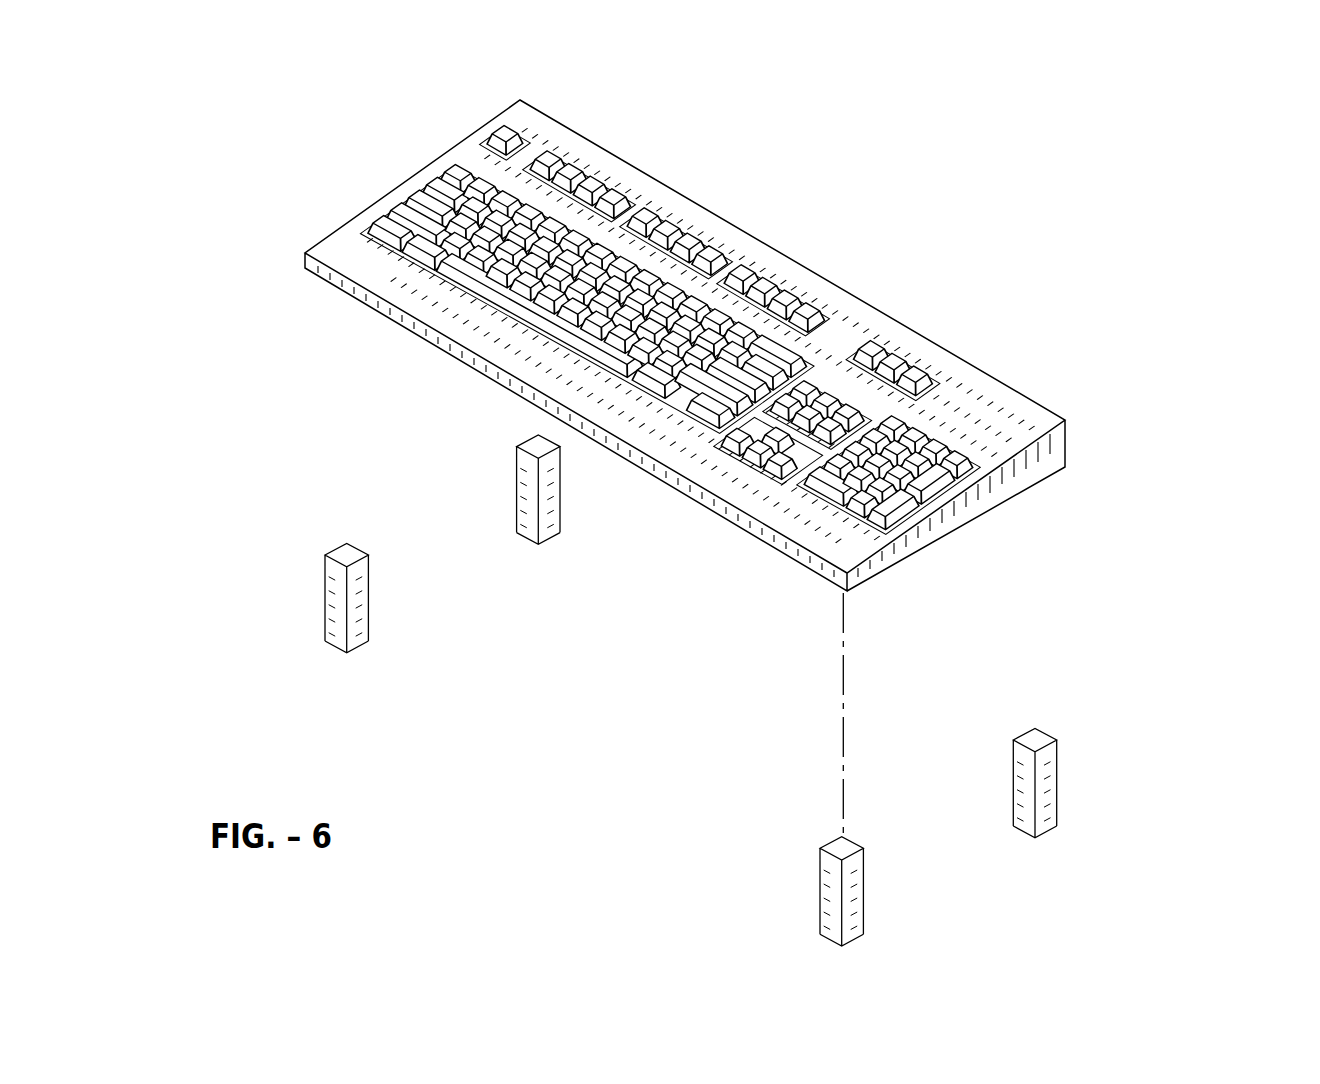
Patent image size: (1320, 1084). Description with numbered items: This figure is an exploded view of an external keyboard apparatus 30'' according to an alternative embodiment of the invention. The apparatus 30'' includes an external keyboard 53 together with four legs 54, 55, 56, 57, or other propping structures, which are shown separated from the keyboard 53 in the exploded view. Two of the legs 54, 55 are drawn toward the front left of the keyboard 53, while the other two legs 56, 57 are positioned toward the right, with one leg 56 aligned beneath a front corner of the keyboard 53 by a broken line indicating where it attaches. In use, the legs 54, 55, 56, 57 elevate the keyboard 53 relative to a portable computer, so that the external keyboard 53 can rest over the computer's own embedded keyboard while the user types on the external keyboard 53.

The external keyboard 53 is at (776, 250).
The leg 54 is at (332, 591).
The leg 55 is at (526, 534).
The leg 56 is at (860, 897).
The leg 57 is at (1050, 787).
The external keyboard apparatus 30'' is at (1186, 337).